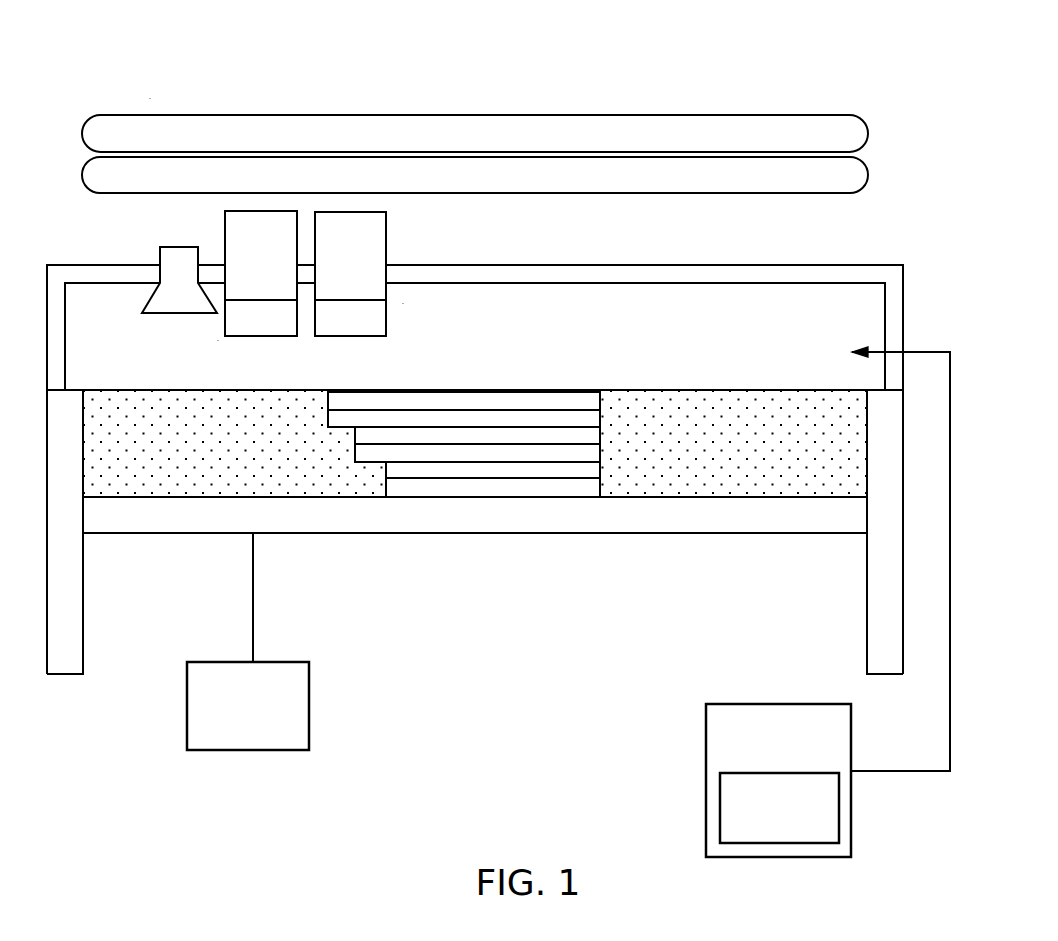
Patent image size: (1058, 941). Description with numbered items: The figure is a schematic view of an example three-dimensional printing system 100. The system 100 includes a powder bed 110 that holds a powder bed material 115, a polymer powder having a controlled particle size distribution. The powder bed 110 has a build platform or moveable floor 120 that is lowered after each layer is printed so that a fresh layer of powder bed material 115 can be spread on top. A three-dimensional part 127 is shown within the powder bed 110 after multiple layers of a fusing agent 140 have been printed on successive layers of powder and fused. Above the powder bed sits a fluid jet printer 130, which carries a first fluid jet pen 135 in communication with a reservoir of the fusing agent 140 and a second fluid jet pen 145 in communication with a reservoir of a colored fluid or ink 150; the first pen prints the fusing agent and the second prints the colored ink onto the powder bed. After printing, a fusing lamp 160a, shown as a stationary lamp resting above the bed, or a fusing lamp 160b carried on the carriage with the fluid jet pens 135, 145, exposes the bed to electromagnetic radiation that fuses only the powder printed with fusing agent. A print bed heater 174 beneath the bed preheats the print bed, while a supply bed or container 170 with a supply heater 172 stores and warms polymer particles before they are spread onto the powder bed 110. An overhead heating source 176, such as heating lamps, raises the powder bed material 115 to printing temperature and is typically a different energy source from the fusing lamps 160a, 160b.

The 3-dimensional printing system 100 is at (150, 98).
The powder bed 110 is at (737, 545).
The powder bed material 115 is at (715, 405).
The build platform or moveable floor 120 is at (600, 513).
The 3-dimensional part 127 is at (548, 390).
The fluid jet printer 130 is at (868, 245).
The first fluid jet pen 135 is at (218, 340).
The fusing agent 140 is at (261, 273).
The second fluid jet pen 145 is at (403, 303).
The colored fluid or ink 150 is at (350, 274).
The fusing lamp 160a is at (563, 178).
The fusing lamp 160b is at (173, 264).
The supply bed or container 170 is at (828, 602).
The supply heater 172 is at (779, 808).
The print bed heater 174 is at (248, 641).
The overhead heating source 176 is at (492, 140).